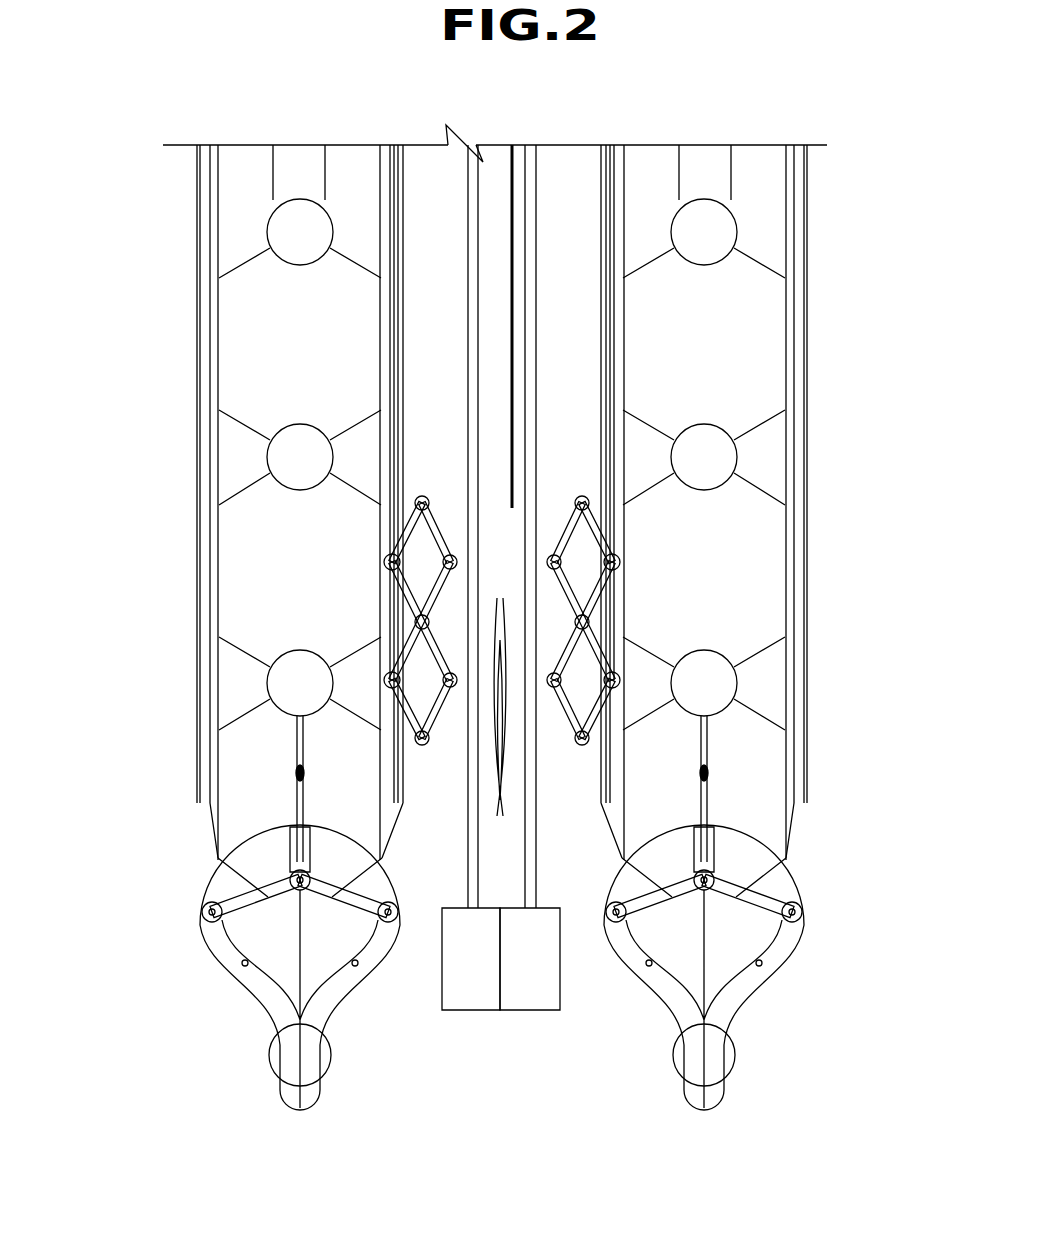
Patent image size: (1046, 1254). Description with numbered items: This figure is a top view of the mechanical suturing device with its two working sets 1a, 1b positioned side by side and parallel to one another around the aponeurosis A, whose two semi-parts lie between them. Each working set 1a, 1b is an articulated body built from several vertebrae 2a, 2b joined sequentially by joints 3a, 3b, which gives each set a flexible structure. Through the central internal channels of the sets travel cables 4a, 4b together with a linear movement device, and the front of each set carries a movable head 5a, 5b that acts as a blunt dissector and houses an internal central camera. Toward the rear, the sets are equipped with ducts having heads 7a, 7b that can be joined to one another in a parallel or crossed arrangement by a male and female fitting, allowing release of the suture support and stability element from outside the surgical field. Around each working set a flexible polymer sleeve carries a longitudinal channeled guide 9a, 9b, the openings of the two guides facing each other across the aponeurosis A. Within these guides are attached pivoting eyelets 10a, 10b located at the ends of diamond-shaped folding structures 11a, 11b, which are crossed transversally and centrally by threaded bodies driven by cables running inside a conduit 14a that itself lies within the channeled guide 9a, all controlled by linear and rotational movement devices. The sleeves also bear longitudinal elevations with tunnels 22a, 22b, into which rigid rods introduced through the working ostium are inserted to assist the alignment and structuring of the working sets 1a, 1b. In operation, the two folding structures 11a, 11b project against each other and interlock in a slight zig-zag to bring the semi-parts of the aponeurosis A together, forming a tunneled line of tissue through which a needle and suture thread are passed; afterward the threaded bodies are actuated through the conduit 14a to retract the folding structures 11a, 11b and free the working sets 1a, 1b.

The working set 1a is at (262, 627).
The working set 1b is at (738, 627).
The vertebra 2a is at (258, 560).
The vertebra 2b is at (715, 577).
The joint 3a is at (292, 683).
The joint 3b is at (712, 460).
The cable 4a is at (297, 735).
The cable 4b is at (712, 738).
The movable head 5a is at (222, 882).
The movable head 5b is at (782, 878).
The duct head 7a is at (475, 990).
The duct head 7b is at (530, 990).
The longitudinal channeled guide 9a is at (390, 355).
The longitudinal channeled guide 9b is at (625, 372).
The pivoting eyelet 10a is at (387, 563).
The pivoting eyelet 10b is at (612, 680).
The diamond-shaped folding structure 11a is at (417, 527).
The diamond-shaped folding structure 11b is at (590, 527).
The conduit 14a is at (390, 322).
The tunnel 22a is at (210, 420).
The tunnel 22b is at (798, 388).
The aponeurosis A is at (506, 726).